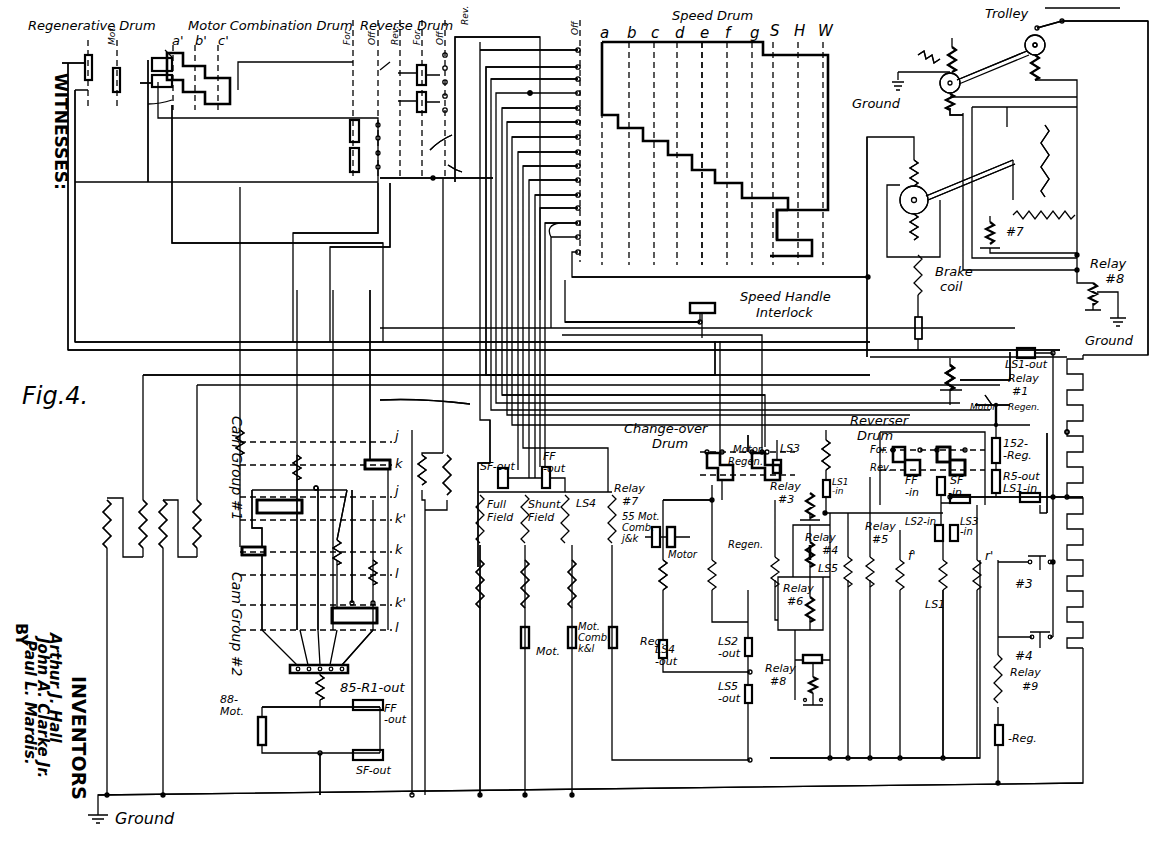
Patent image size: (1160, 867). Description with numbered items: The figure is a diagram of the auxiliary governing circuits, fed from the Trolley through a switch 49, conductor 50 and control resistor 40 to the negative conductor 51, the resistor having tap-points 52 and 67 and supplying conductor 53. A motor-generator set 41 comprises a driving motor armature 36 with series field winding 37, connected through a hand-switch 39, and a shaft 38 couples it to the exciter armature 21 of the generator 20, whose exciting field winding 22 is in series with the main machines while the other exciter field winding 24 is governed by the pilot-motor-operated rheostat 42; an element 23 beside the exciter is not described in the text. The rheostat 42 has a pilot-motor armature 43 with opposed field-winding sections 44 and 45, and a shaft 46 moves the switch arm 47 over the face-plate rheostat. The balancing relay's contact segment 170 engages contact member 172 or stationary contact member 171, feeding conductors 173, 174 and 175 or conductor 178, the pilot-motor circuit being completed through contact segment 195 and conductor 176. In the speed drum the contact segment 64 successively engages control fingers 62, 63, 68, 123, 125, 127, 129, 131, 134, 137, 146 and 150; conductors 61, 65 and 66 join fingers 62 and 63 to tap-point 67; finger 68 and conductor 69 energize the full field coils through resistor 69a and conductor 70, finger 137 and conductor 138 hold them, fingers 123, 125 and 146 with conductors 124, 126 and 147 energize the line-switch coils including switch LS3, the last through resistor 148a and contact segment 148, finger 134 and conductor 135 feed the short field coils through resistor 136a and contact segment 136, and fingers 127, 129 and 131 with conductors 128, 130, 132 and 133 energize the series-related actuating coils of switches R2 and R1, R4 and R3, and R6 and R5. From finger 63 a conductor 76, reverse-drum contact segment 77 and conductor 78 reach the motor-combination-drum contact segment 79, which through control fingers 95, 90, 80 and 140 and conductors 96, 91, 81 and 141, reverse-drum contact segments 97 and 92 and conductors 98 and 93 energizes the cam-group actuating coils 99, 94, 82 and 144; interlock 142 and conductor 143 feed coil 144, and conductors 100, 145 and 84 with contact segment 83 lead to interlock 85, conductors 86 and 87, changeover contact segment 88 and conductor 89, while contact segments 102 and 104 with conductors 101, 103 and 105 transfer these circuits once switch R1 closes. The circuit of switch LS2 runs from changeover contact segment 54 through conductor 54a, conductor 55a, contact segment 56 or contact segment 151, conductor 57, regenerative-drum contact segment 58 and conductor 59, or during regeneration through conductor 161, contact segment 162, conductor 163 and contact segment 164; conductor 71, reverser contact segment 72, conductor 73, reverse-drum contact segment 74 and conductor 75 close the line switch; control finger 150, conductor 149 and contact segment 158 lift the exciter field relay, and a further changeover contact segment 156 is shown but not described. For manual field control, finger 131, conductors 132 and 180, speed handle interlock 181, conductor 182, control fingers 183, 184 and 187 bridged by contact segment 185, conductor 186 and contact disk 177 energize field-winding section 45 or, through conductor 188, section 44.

The regenerative drum contact 164 is at (85, 50).
The conductor 163 is at (59, 63).
The contact segment 58 is at (120, 70).
The contact segment 90 is at (159, 63).
The contact segment 95 is at (161, 81).
The conductor 91 is at (138, 83).
The conductor 81 is at (165, 50).
The contact segment 80 is at (168, 41).
The motor combination drum segment 79 is at (222, 78).
The conductor 140 is at (144, 102).
The conductor 96 is at (164, 118).
The conductor 59 is at (75, 132).
The conductor 57 is at (68, 243).
The conductor 141 is at (172, 162).
The contact 92 is at (350, 131).
The contact 97 is at (350, 160).
The conductor 98 is at (378, 206).
The conductor 93 is at (385, 225).
The conductor 78 is at (374, 68).
The reverse drum contact 74 is at (417, 73).
The reverse drum contact 77 is at (417, 101).
The conductor 75 is at (450, 138).
The conductor 61 is at (457, 161).
The conductor 66 is at (433, 178).
The conductor 76 is at (512, 37).
The conductor 69 is at (535, 50).
The terminal 68 is at (578, 50).
The terminal 62 is at (566, 59).
The conductor 138 is at (530, 79).
The terminal 137 is at (565, 73).
The conductor 65 is at (525, 85).
The terminal 63 is at (566, 88).
The conductor 149 is at (528, 108).
The terminal 150 is at (565, 102).
The conductor 124 is at (542, 116).
The terminal 123 is at (565, 116).
The conductor 126 is at (545, 130).
The terminal 125 is at (565, 131).
The conductor 128 is at (547, 145).
The terminal 127 is at (565, 145).
The conductor 147 is at (549, 159).
The terminal 146 is at (565, 160).
The conductor 130 is at (553, 174).
The terminal 129 is at (594, 174).
The conductor 132 is at (556, 188).
The terminal 131 is at (594, 189).
The conductor 135 is at (559, 202).
The terminal 134 is at (594, 203).
The conductor 186 is at (561, 217).
The terminal 184 is at (594, 217).
The terminal 183 is at (594, 231).
The terminal 187 is at (594, 246).
The conductor 188 is at (640, 277).
The speed drum 64 is at (711, 153).
The speed drum segment 185 is at (825, 222).
The conductor 175 is at (867, 183).
The relay coil 44 is at (920, 162).
The relay 42 is at (928, 176).
The relay armature 43 is at (970, 180).
The resistor 46 is at (1021, 159).
The contact arm 47 is at (1022, 168).
The relay coil 45 is at (923, 235).
The resistor 22 is at (955, 50).
The spring 23 is at (915, 55).
The relay 41 is at (1011, 44).
The pivot 36 is at (1046, 44).
The relay coil 37 is at (1044, 76).
The armature 38 is at (985, 68).
The relay 20 is at (937, 83).
The relay coil 21 is at (938, 100).
The conductor 24 is at (950, 112).
The switch 39 is at (1052, 16).
The trolley conductor 49 is at (1100, 24).
The conductor 50 is at (1126, 188).
The regenerative interlock contact 195 is at (922, 328).
The conductor 174 is at (872, 340).
The conductor 178 is at (907, 370).
The conductor 176 is at (858, 375).
The conductor 182 is at (632, 314).
The speed handle interlock contact 181 is at (690, 305).
The conductor 180 is at (600, 221).
The conductor 133 is at (414, 375).
The conductor 73 is at (480, 406).
The conductor 136 is at (495, 493).
The change-over drum contact 56 is at (1035, 452).
The contact 162 is at (780, 452).
The reverser drum segment 72 is at (951, 457).
The conductor 172 is at (990, 390).
The conductor 173 is at (996, 366).
The switch 171 is at (991, 397).
The switch blade 170 is at (998, 420).
The relay coil 177 is at (964, 371).
The contact 52 is at (1065, 432).
The conductor 67 is at (1083, 497).
The resistor 40 is at (1083, 462).
The conductor 53 is at (1035, 505).
The conductor 161 is at (790, 518).
The interlock contact 151 is at (687, 531).
The interlock contact 158 is at (620, 640).
The interlock contact 156 is at (509, 637).
The interlock contact 148 is at (556, 631).
The conductor 70 is at (484, 775).
The ground conductor 51 is at (752, 784).
The conductor 71 is at (943, 742).
The resistor R1 is at (99, 534).
The resistor R2 is at (150, 534).
The resistor R5 is at (173, 535).
The resistor R6 is at (208, 528).
The resistor R3 is at (422, 490).
The resistor R4 is at (458, 478).
The cam contact 82 is at (244, 436).
The cam contact 99 is at (314, 461).
The contact 103 is at (313, 481).
The cam contact 94 is at (349, 514).
The contact 142 is at (376, 457).
The conductor 143 is at (366, 490).
The conductor 105 is at (353, 519).
The cam contact 144 is at (375, 552).
The contact 102 is at (279, 507).
The conductor 101 is at (262, 536).
The conductor 100 is at (290, 542).
The contact 83 is at (253, 561).
The conductor 84 is at (252, 592).
The conductor 86 is at (320, 600).
The contact 104 is at (354, 615).
The conductor 145 is at (364, 644).
The resistor 85 is at (333, 686).
The conductor 87 is at (272, 700).
The motor interlock contact 88 is at (283, 715).
The conductor 89 is at (320, 778).
The resistor 69a is at (466, 584).
The resistor 136a is at (546, 583).
The resistor 148a is at (577, 590).
The conductor 55a is at (705, 504).
The conductor 54a is at (805, 758).
The motor interlock contact 54 is at (821, 651).
The relay coil LS3 is at (813, 455).
The relay coil LS2 is at (647, 575).